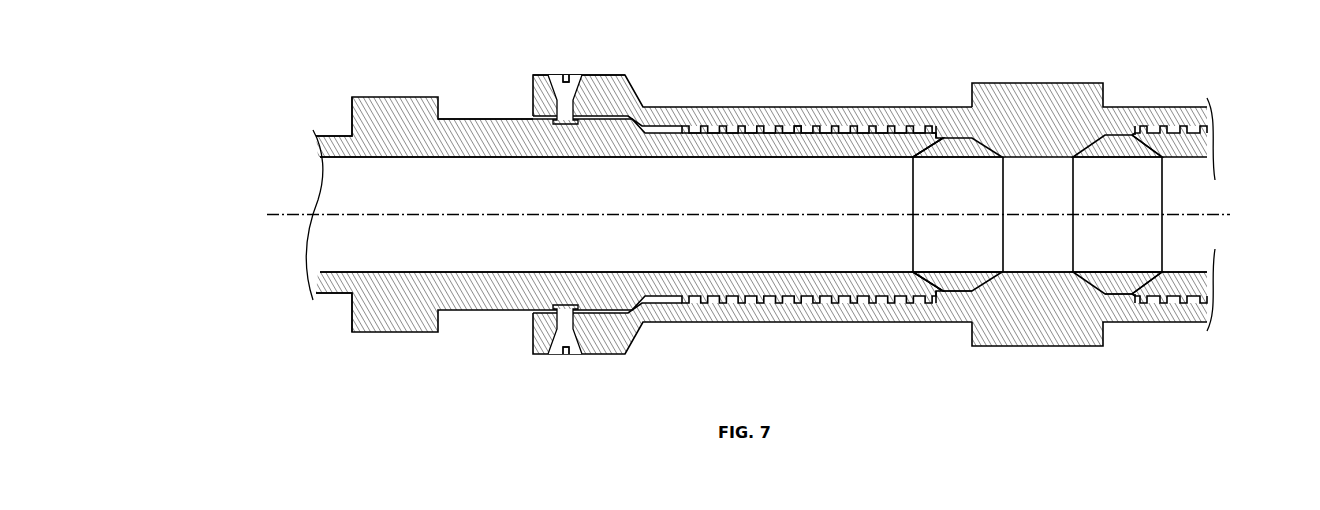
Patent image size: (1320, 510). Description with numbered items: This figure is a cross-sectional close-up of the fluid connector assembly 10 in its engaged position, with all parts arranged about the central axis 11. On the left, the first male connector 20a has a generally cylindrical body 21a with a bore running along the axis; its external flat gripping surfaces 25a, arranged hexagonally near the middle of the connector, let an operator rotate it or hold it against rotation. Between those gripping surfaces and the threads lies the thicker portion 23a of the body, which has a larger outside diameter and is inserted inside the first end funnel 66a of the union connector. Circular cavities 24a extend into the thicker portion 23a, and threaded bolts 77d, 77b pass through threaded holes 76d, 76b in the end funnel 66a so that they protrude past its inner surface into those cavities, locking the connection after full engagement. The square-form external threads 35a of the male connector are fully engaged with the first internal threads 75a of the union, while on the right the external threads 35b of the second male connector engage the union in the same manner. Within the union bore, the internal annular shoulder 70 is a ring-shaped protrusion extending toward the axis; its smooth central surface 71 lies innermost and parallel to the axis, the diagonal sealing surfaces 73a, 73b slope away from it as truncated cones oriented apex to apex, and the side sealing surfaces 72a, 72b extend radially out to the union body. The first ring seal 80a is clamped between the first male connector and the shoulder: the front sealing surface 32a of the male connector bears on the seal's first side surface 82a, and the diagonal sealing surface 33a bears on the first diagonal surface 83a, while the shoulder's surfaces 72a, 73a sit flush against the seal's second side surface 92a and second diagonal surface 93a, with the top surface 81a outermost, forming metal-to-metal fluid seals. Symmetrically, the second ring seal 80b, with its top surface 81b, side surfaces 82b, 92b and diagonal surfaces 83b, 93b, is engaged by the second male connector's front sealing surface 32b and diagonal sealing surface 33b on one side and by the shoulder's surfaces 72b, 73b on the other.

The fluid connector assembly 10 is at (388, 41).
The central axis 11 is at (290, 214).
The first male connector 20a is at (466, 74).
The cylindrical body 21a is at (328, 134).
The thicker portion 23a is at (510, 118).
The circular cavities 24a is at (580, 117).
The external flat gripping surfaces 25a is at (395, 333).
The front sealing surface 32a is at (948, 292).
The front sealing surface 32b is at (1128, 295).
The diagonal sealing surface 33a is at (932, 274).
The diagonal sealing surface 33b is at (1155, 276).
The external threads 35a is at (833, 143).
The external threads 35b is at (1169, 214).
The first end funnel 66a is at (600, 90).
The internal annular shoulder 70 is at (1025, 150).
The central surface 71 is at (1040, 272).
The side sealing surface 72a is at (989, 276).
The side sealing surface 72b is at (1105, 293).
The diagonal sealing surface 73a is at (990, 298).
The diagonal sealing surface 73b is at (1088, 278).
The first internal threads 75a is at (790, 126).
The threaded hole 76b is at (578, 328).
The threaded hole 76d is at (576, 100).
The threaded bolt 77b is at (552, 355).
The threaded bolt 77d is at (555, 75).
The first ring seal 80a is at (937, 230).
The second ring seal 80b is at (1148, 232).
The top surface 81a is at (958, 135).
The top surface 81b is at (1117, 133).
The first side surface 82a is at (942, 140).
The first side surface 82b is at (1133, 140).
The first diagonal surface 83a is at (932, 145).
The first diagonal surface 83b is at (1142, 147).
The second side surface 92a is at (975, 147).
The second side surface 92b is at (1118, 145).
The second diagonal surface 93a is at (988, 150).
The second diagonal surface 93b is at (1093, 148).